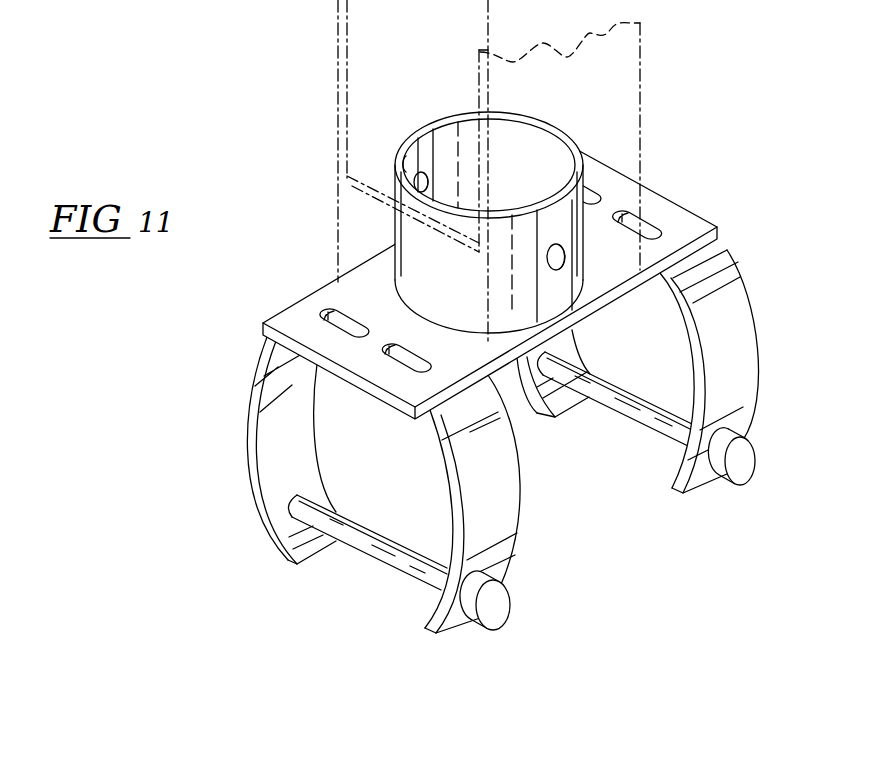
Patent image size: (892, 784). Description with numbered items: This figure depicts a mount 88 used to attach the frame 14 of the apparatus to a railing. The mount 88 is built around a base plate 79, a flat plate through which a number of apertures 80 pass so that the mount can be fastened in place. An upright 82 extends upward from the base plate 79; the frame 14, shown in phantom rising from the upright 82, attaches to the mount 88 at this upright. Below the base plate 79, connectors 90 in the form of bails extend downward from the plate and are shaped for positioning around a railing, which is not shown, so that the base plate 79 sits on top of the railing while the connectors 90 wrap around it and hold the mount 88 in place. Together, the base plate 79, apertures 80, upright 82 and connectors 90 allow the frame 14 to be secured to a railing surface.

The frame 14 is at (607, 100).
The base plate 79 is at (665, 220).
The apertures 80 is at (395, 357).
The upright 82 is at (415, 257).
The mount 88 is at (343, 298).
The connectors 90 is at (277, 462).